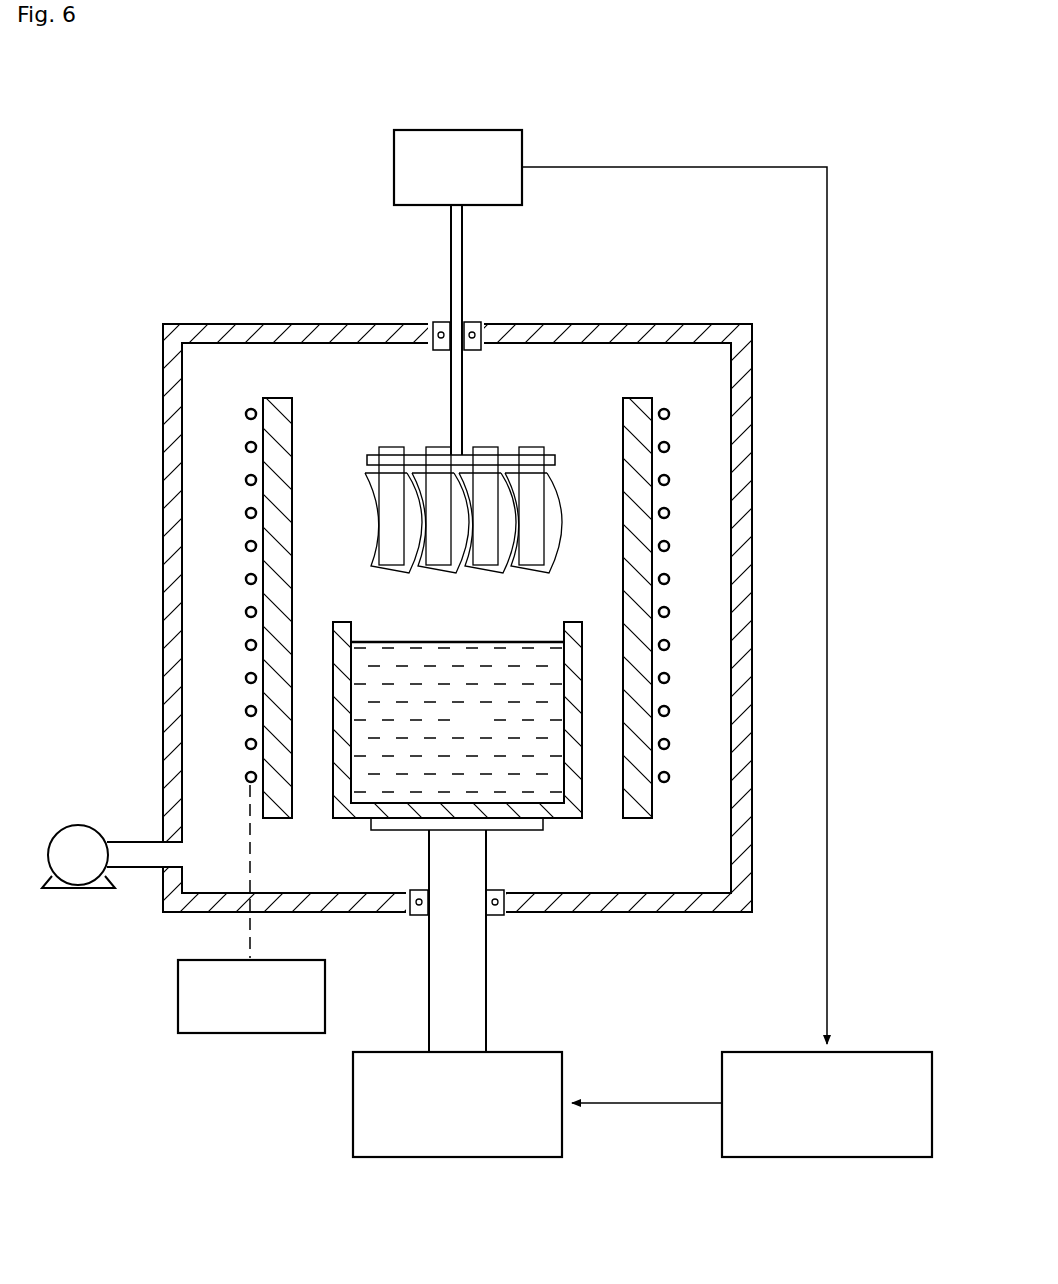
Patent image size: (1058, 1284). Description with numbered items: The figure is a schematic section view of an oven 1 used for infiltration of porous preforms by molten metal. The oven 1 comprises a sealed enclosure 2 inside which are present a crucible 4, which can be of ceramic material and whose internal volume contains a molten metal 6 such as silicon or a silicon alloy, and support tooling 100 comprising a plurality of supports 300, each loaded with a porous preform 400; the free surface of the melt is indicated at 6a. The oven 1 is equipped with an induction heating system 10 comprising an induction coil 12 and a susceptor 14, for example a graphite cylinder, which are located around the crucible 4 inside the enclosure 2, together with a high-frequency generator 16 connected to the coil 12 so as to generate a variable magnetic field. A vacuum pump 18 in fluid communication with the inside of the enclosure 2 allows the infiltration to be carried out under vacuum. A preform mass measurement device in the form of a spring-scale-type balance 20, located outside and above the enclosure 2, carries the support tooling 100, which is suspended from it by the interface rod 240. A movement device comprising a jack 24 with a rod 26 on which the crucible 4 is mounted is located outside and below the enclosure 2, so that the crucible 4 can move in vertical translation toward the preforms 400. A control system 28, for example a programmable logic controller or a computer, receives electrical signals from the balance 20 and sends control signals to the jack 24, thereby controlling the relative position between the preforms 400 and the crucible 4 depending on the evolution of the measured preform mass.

The oven 1 is at (165, 146).
The sealed enclosure 2 is at (168, 651).
The crucible 4 is at (572, 716).
The molten metal 6 is at (457, 717).
The melt surface 6a is at (385, 641).
The induction heating system 10 is at (282, 828).
The induction coil 12 is at (251, 409).
The susceptor 14 is at (278, 434).
The high-frequency generator 16 is at (262, 1009).
The vacuum pump 18 is at (78, 840).
The balance 20 is at (468, 181).
The jack 24 is at (470, 1112).
The rod 26 is at (470, 975).
The control system 28 is at (839, 1112).
The support tooling 100 is at (486, 489).
The interface rod 240 is at (450, 381).
The support 300 is at (486, 528).
The porous preform 400 is at (580, 578).